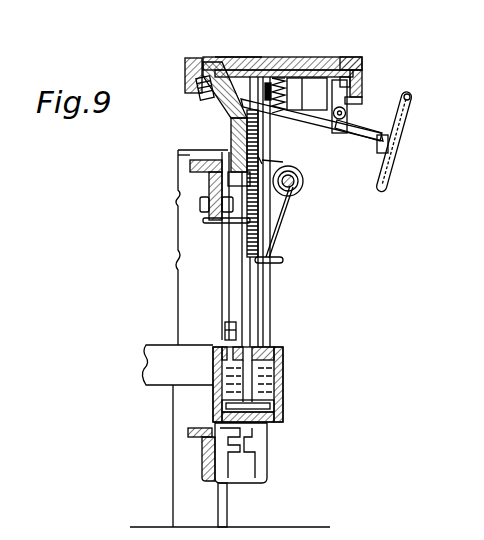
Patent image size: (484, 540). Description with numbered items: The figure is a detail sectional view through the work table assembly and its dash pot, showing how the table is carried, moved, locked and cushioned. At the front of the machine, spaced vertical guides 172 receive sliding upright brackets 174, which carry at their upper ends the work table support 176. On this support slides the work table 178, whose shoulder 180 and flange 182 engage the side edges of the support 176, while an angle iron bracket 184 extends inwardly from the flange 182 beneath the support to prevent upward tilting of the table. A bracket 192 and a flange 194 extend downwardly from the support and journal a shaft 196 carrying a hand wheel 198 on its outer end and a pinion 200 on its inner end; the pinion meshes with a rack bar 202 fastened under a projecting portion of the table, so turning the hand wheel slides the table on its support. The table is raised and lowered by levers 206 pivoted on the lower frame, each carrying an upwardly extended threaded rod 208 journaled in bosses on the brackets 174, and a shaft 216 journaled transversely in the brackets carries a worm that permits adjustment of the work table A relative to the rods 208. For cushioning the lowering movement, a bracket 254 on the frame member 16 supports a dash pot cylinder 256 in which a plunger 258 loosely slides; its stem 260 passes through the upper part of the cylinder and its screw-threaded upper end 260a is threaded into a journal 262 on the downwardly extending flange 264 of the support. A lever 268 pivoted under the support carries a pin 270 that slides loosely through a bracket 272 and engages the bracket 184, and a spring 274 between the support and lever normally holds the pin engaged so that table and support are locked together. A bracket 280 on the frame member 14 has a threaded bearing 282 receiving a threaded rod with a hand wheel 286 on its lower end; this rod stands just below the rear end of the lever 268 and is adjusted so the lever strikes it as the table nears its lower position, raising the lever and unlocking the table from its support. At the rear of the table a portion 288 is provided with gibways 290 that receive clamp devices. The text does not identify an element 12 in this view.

The supply pipe 12 is at (207, 503).
The frame member 14 is at (192, 167).
The frame member 16 is at (205, 462).
The vertical guides 172 is at (226, 324).
The upright brackets 174 is at (264, 162).
The work table support 176 is at (262, 66).
The work table 178 is at (302, 58).
The shoulder 180 is at (210, 62).
The flange 182 is at (363, 83).
The angle iron bracket 184 is at (358, 102).
The bracket 192 is at (348, 118).
The flange 194 is at (272, 118).
The shaft 196 is at (398, 128).
The hand wheel 198 is at (394, 155).
The pinion 200 is at (185, 181).
The rack bar 202 is at (248, 55).
The levers 206 is at (177, 365).
The threaded rod 208 is at (262, 282).
The shaft 216 is at (293, 187).
The bracket 254 is at (262, 465).
The dash pot cylinder 256 is at (284, 385).
The plunger 258 is at (278, 403).
The stem 260 is at (259, 307).
The screw-threaded upper end 260a is at (238, 258).
The journal 262 is at (305, 170).
The flange 264 is at (232, 128).
The lever 268 is at (293, 163).
The pin 270 is at (408, 104).
The bracket 272 is at (352, 57).
The spring 274 is at (299, 95).
The bracket 280 is at (205, 222).
The threaded bearing 282 is at (276, 235).
The hand wheel 286 is at (224, 292).
The portion 288 is at (190, 80).
The gibways 290 is at (192, 58).
The work table A is at (357, 66).